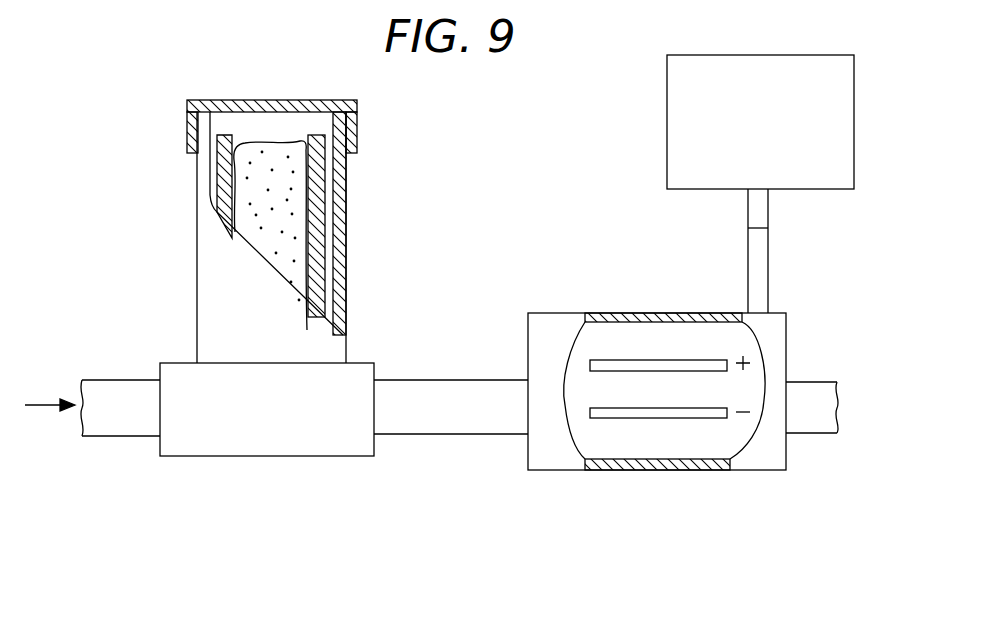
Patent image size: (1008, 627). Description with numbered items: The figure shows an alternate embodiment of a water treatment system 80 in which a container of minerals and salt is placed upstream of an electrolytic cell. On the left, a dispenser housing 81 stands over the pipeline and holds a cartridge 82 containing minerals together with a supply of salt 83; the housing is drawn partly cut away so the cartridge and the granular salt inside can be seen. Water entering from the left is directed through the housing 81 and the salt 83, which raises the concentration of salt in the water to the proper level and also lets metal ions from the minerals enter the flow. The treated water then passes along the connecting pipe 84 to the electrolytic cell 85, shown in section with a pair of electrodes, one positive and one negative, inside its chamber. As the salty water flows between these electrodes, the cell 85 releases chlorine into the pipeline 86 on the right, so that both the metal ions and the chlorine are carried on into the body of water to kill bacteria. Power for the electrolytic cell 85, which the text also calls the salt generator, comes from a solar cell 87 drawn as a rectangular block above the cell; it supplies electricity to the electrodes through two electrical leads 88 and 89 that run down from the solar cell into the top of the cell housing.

The system 80 is at (475, 180).
The dispenser housing 81 is at (346, 200).
The cartridge 82 is at (325, 167).
The supply of salt 83 is at (290, 253).
The connecting pipe 84 is at (437, 380).
The electrolytic cell 85 is at (673, 313).
The pipeline 86 is at (810, 427).
The solar cell 87 is at (854, 115).
The electrical lead 88 is at (768, 282).
The electrical lead 89 is at (768, 228).